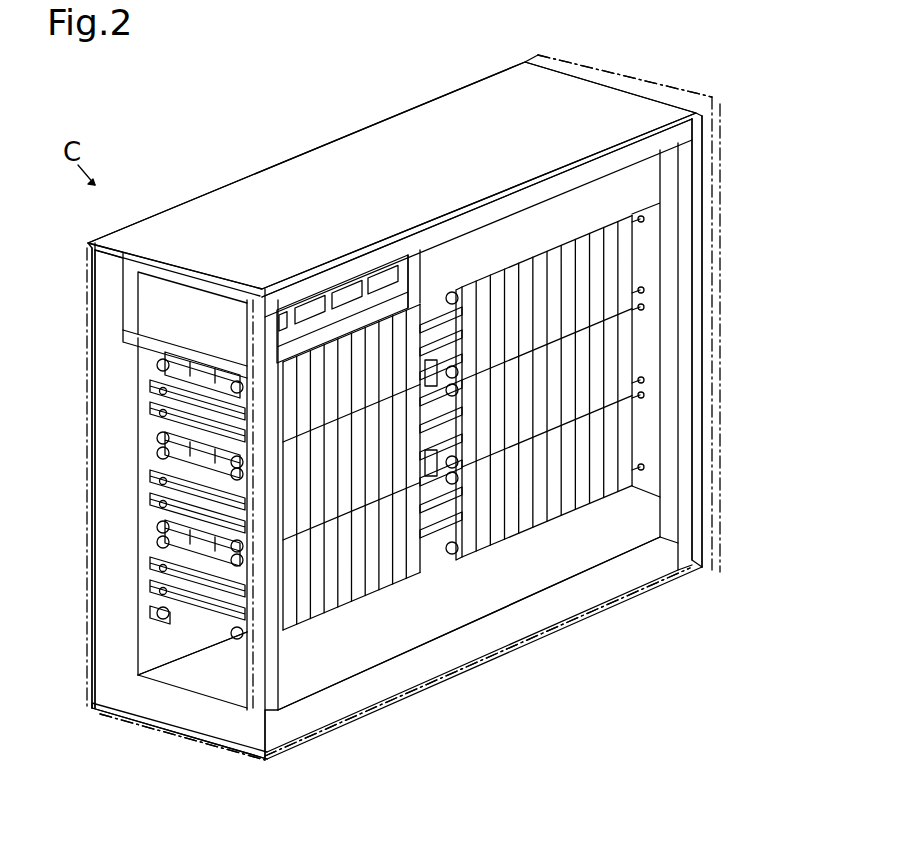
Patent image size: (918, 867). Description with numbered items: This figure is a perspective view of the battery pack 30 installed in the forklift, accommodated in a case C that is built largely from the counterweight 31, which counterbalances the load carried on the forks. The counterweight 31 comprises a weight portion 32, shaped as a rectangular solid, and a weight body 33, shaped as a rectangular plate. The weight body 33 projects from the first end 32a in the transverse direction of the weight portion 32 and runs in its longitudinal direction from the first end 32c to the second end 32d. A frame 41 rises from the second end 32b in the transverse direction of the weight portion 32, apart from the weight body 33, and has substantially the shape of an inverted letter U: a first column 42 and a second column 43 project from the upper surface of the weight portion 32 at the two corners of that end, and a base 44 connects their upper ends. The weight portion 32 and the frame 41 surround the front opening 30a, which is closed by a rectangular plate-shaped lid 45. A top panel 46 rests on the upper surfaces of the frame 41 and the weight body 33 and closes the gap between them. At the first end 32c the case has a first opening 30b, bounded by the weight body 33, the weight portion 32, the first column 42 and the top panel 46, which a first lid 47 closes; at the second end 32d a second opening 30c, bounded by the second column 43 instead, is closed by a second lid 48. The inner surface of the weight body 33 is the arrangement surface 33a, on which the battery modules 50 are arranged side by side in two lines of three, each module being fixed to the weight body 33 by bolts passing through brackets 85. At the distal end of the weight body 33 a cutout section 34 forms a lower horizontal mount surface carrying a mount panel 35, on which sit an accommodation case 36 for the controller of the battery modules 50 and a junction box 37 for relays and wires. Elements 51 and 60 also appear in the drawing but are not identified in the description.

The battery pack 30 is at (608, 548).
The front opening 30a is at (523, 585).
The first opening 30b is at (210, 683).
The second opening 30c is at (657, 427).
The counterweight 31 is at (52, 617).
The weight portion 32 is at (153, 695).
The first end in the transverse direction of the weight portion 32a is at (92, 692).
The second end in the transverse direction of the weight portion 32b is at (392, 692).
The first end in the longitudinal direction of the weight portion 32c is at (240, 733).
The second end in the longitudinal direction of the weight portion 32d is at (697, 550).
The weight body 33 is at (114, 618).
The arrangement surface 33a is at (142, 364).
The cutout section 34 is at (127, 303).
The mount panel 35 is at (187, 350).
The accommodation case 36 is at (221, 304).
The junction box 37 is at (584, 198).
The frame 41 is at (693, 355).
The first column 42 is at (281, 655).
The second column 43 is at (687, 393).
The base 44 is at (498, 207).
The lid 45 is at (497, 665).
The top panel 46 is at (346, 153).
The first lid 47 is at (124, 724).
The second lid 48 is at (648, 80).
The battery module 50 is at (358, 602).
The bus bar module 51 is at (152, 467).
The wiring panel 60 is at (342, 347).
The bracket 85 is at (151, 398).